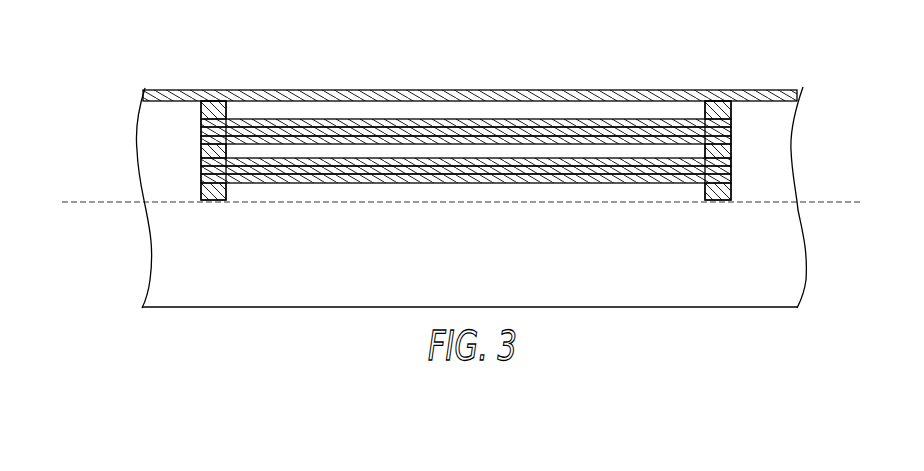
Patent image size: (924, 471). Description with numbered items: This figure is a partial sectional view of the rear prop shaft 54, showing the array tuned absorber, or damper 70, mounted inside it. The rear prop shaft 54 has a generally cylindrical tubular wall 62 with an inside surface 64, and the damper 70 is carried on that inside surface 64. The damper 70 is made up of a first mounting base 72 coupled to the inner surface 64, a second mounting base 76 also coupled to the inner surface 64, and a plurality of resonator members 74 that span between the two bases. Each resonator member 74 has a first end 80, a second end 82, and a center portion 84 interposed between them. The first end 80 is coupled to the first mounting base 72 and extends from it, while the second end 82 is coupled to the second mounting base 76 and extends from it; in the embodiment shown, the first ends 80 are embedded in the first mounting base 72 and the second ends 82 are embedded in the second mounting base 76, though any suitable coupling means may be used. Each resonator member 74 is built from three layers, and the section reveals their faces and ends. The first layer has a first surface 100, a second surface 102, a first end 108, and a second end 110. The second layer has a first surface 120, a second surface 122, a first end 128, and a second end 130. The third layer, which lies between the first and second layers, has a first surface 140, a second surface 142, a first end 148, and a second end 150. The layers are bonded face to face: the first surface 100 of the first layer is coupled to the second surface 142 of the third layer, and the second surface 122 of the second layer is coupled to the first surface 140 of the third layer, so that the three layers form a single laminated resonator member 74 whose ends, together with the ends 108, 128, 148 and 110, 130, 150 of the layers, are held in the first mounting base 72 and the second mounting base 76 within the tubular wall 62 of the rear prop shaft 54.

The rear prop shaft 54 is at (587, 41).
The tubular wall 62 is at (148, 87).
The inside surface 64 is at (329, 107).
The damper 70 is at (429, 111).
The first mounting base 72 is at (207, 100).
The resonator members 74 is at (399, 152).
The second mounting base 76 is at (728, 90).
The first end 80 is at (233, 111).
The second end 82 is at (697, 111).
The center portion 84 is at (502, 114).
The first surface 100 is at (529, 183).
The second surface 102 is at (351, 153).
The first end 108 is at (200, 163).
The second end 110 is at (730, 169).
The first surface 120 is at (683, 184).
The second surface 122 is at (685, 168).
The first end 128 is at (200, 178).
The second end 130 is at (730, 178).
The first surface 140 is at (531, 178).
The second surface 142 is at (507, 161).
The first end 148 is at (200, 170).
The second end 150 is at (730, 173).